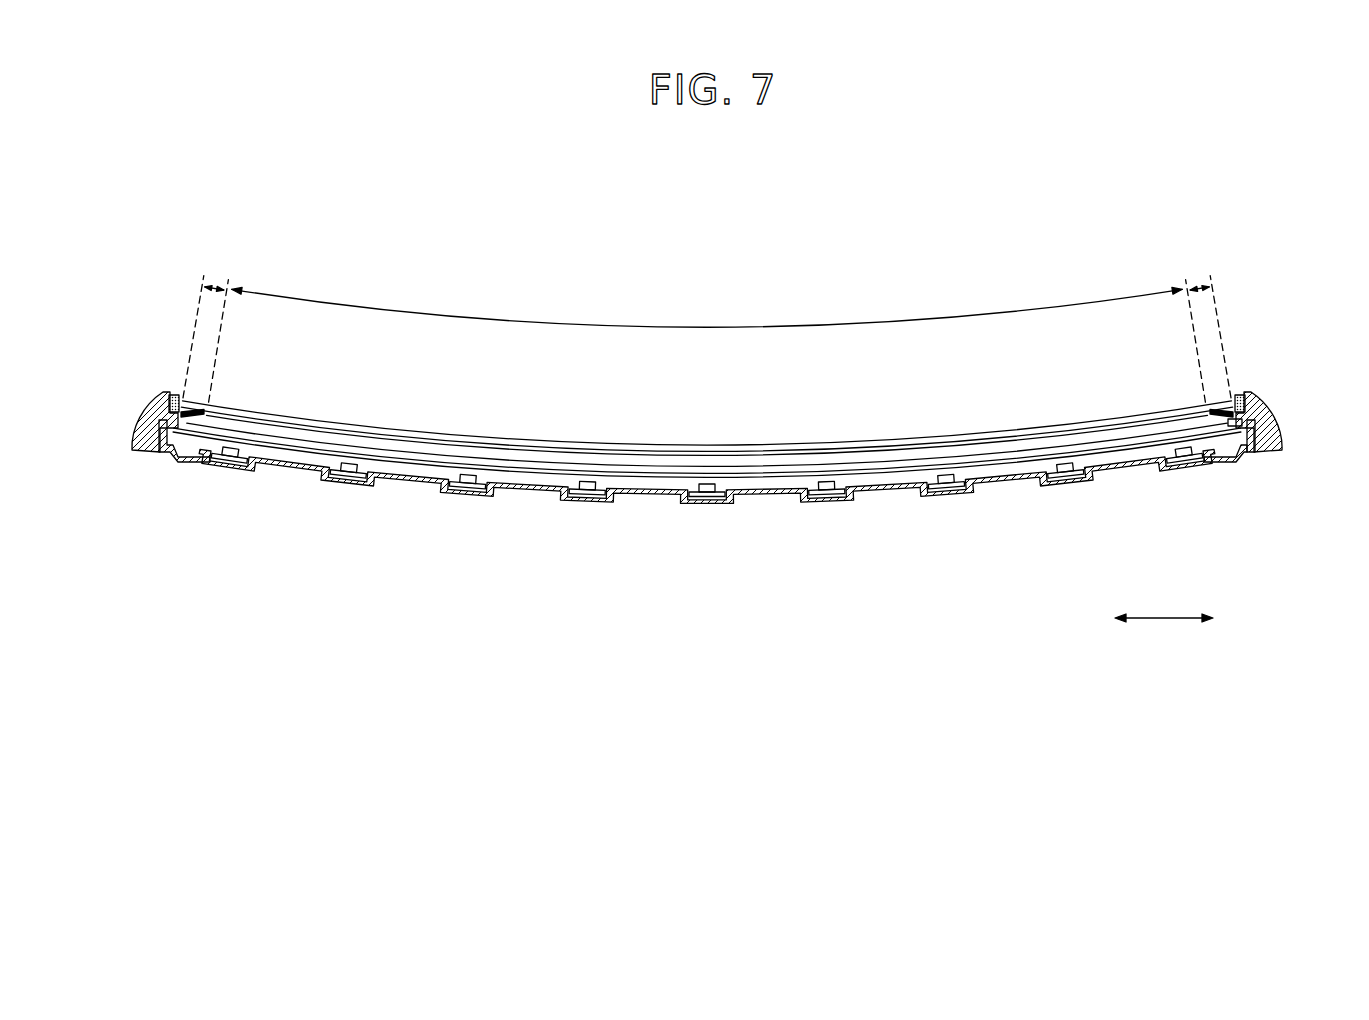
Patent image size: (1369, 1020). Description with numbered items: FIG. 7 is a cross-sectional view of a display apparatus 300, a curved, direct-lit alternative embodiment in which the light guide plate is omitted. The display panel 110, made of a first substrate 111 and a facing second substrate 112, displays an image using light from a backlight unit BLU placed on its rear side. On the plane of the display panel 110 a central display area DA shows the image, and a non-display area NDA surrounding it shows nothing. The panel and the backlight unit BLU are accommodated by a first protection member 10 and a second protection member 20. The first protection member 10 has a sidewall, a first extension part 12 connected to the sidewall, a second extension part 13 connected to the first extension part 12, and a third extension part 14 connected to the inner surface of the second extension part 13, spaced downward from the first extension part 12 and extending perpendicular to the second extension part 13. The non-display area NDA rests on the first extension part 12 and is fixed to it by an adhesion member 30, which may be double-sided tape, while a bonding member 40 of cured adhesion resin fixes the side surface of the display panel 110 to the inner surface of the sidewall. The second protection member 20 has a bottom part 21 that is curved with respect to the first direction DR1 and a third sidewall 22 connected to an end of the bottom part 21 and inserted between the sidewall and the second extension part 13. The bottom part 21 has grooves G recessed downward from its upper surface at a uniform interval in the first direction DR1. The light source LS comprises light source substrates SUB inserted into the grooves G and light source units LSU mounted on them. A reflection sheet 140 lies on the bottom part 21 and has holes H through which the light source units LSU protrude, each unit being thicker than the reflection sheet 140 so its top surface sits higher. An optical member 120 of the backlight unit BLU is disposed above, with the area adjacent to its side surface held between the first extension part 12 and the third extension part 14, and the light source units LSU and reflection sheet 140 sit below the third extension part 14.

The display apparatus 300 is at (1038, 247).
The first protection member 10 is at (1337, 527).
The first extension part 12 is at (1210, 438).
The second extension part 13 is at (1240, 437).
The third extension part 14 is at (1224, 440).
The second protection member 20 is at (192, 527).
The bottom part 21 is at (168, 456).
The third sidewall 22 is at (140, 455).
The adhesion member 30 is at (1224, 410).
The bonding member 40 is at (1238, 398).
The display panel 110 is at (872, 378).
The first substrate 111 is at (791, 451).
The second substrate 112 is at (850, 443).
The optical member 120 is at (710, 472).
The reflection sheet 140 is at (660, 494).
The backlight unit BLU is at (593, 608).
The light source LS is at (648, 566).
The light source unit LSU is at (586, 490).
The light source substrate SUB is at (599, 498).
The groove G is at (946, 482).
The hole H is at (474, 483).
The display area DA is at (707, 307).
The non-display area NDA is at (707, 327).
The first direction DR1 is at (1189, 618).